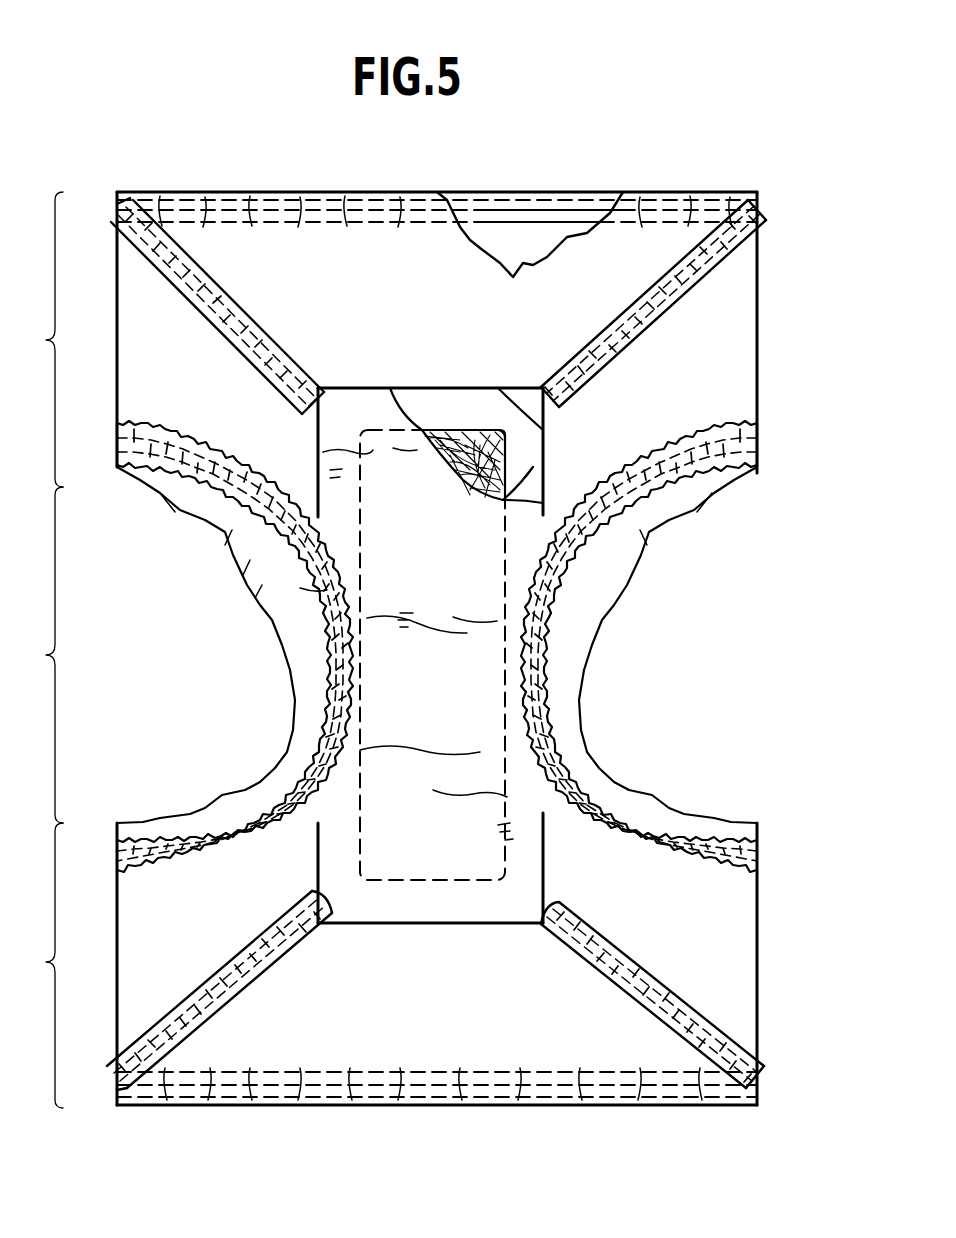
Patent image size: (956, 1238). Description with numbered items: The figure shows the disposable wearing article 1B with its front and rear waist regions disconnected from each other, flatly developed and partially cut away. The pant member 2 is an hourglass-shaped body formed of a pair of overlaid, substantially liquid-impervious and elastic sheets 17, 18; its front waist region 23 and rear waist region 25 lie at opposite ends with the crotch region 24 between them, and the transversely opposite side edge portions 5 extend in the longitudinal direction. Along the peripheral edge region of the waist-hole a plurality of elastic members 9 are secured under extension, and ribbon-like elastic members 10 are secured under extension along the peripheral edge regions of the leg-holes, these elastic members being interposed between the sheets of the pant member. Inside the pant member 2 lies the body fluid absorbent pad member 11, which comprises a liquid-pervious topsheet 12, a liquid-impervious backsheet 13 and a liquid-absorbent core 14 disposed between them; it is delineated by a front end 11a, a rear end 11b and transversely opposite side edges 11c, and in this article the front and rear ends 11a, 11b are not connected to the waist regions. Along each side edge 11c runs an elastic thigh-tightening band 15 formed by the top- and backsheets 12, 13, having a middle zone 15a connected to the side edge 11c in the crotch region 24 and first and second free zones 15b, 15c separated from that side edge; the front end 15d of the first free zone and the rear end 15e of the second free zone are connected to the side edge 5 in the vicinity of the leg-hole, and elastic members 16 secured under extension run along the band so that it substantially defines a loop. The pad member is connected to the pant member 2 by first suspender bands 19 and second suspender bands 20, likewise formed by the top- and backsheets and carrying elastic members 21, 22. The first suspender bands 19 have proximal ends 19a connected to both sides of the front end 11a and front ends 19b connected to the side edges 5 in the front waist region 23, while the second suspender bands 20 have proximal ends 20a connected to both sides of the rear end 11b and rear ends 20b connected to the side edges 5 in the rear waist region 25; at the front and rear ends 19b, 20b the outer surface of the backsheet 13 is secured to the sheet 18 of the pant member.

The disposable wearing article 1B is at (670, 188).
The pant member 2 is at (757, 260).
The side edge portions 5 is at (140, 312).
The elastic members 9 is at (540, 212).
The ribbon-like elastic members 10 is at (313, 560).
The pad member 11 is at (350, 927).
The front end 11a is at (440, 903).
The rear end 11b is at (443, 407).
The side edges 11c is at (337, 480).
The topsheet 12 is at (363, 417).
The backsheet 13 is at (533, 473).
The liquid-absorbent core 14 is at (485, 430).
The elastic thigh-tightening bands 15 is at (280, 530).
The middle zone 15a is at (340, 663).
The first free zone 15b is at (230, 838).
The second free zone 15c is at (160, 493).
The front end 15d is at (117, 860).
The rear end 15e is at (140, 432).
The elastic members 16 is at (222, 512).
The sheet 17 is at (495, 245).
The sheet 18 is at (378, 247).
The first suspender bands 19 is at (197, 1007).
The proximal ends 19a is at (330, 893).
The front ends 19b is at (123, 1077).
The second suspender bands 20 is at (258, 337).
The proximal ends 20a is at (317, 387).
The rear ends 20b is at (118, 203).
The elastic members 21 is at (270, 955).
The elastic members 22 is at (215, 315).
The front waist region 23 is at (36, 965).
The crotch region 24 is at (36, 655).
The rear waist region 25 is at (36, 339).